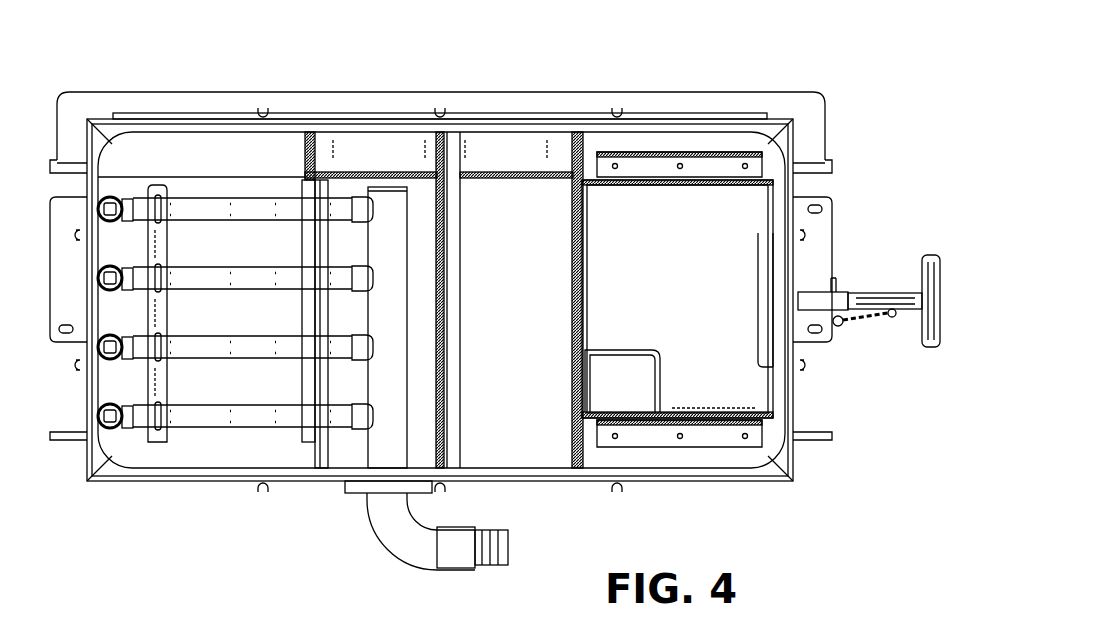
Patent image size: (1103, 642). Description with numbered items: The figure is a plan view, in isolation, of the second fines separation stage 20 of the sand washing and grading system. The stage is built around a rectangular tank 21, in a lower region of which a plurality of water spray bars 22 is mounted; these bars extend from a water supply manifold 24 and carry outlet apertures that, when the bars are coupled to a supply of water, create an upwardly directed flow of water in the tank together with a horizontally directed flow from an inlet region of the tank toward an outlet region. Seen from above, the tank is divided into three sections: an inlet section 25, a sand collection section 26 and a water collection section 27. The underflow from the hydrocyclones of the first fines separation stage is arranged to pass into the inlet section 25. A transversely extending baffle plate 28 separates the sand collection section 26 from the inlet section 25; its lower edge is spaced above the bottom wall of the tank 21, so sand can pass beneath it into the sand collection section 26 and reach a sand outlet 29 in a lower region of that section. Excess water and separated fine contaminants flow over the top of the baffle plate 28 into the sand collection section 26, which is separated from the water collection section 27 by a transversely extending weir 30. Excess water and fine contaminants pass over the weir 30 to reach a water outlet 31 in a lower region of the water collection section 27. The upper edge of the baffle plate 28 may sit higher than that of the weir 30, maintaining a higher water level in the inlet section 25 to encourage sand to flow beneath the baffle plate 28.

The second fines separation stage 20 is at (480, 66).
The rectangular tank 21 is at (667, 481).
The water spray bars 22 is at (243, 425).
The water supply manifold 24 is at (383, 440).
The inlet section 25 is at (208, 242).
The sand collection section 26 is at (413, 214).
The water collection section 27 is at (528, 204).
The baffle plate 28 is at (325, 372).
The sand outlet 29 is at (367, 143).
The weir 30 is at (456, 396).
The water outlet 31 is at (505, 150).